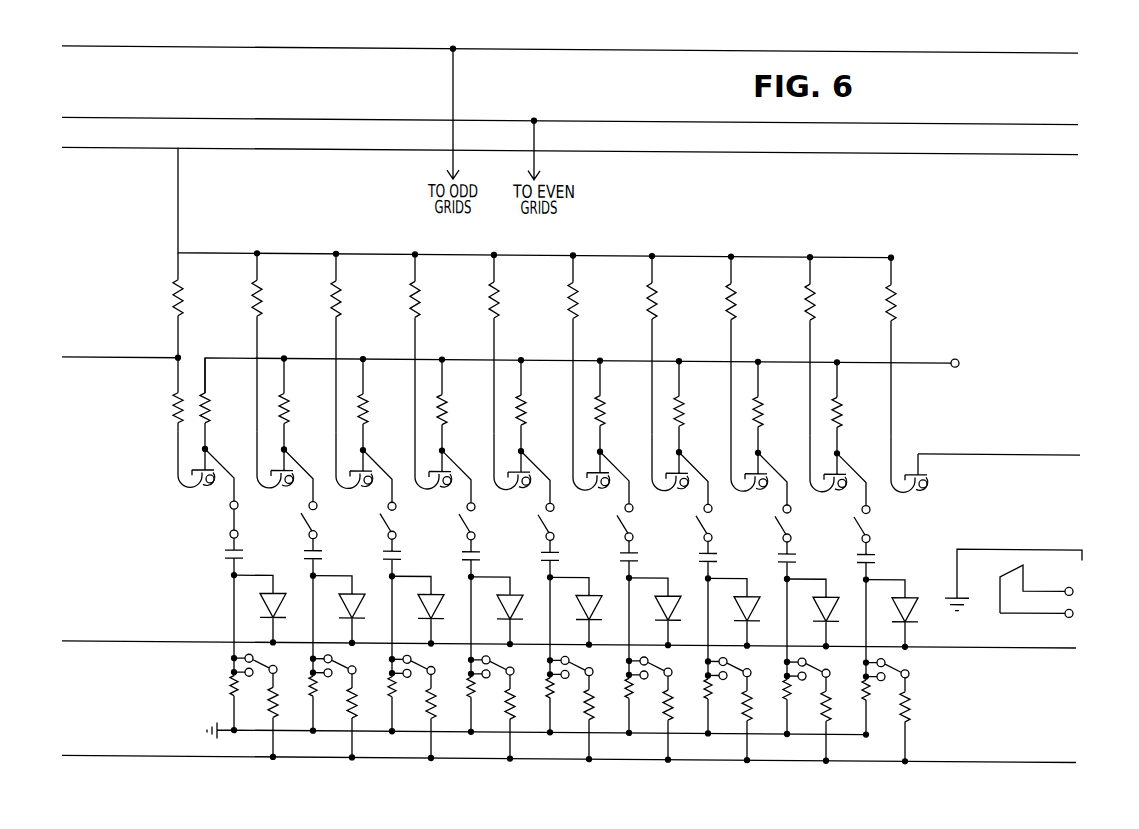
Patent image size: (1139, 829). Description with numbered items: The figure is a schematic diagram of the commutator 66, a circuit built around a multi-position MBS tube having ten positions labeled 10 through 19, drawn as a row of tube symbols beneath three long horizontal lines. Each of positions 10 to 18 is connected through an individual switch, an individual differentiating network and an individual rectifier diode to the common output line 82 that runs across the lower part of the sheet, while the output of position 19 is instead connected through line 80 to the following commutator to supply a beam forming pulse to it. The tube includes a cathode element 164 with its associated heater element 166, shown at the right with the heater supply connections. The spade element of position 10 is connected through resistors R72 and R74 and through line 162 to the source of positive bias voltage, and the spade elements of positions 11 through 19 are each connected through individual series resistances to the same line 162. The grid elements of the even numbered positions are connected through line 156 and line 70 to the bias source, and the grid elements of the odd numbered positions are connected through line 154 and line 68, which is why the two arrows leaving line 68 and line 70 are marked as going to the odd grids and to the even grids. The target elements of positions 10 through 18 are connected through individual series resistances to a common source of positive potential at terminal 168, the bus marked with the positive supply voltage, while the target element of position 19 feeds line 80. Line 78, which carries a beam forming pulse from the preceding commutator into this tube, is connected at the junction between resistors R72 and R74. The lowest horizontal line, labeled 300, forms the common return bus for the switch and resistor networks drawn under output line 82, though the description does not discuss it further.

The commutator 66 is at (739, 206).
The line 68 is at (86, 46).
The line 70 is at (90, 117).
The line 162 is at (292, 146).
The line 154 is at (456, 134).
The line 156 is at (537, 134).
The line 78 is at (80, 356).
The line 80 is at (1022, 447).
The output line 82 is at (85, 641).
The common line 300 is at (108, 755).
The cathode element 164 is at (1005, 542).
The heater element 166 is at (1015, 609).
The terminal 168 is at (952, 352).
The resistor R74 is at (183, 292).
The resistor R72 is at (172, 409).
The position 10 is at (194, 458).
The position 11 is at (275, 460).
The position 12 is at (354, 460).
The position 13 is at (433, 461).
The position 14 is at (512, 461).
The position 15 is at (591, 462).
The position 16 is at (670, 463).
The position 17 is at (749, 463).
The position 18 is at (828, 464).
The position 19 is at (909, 464).